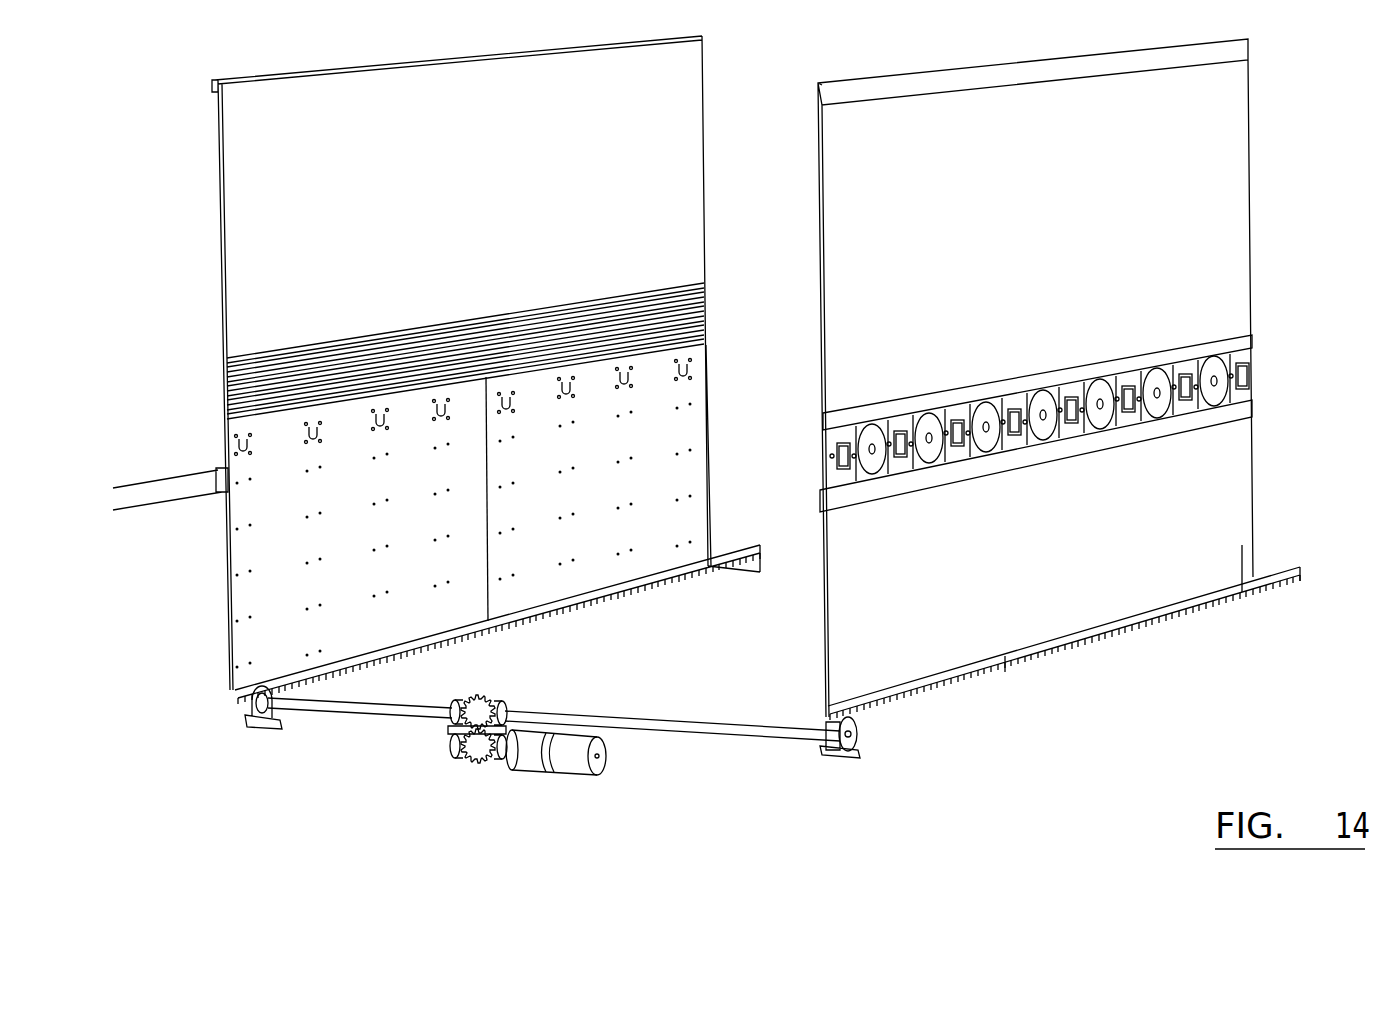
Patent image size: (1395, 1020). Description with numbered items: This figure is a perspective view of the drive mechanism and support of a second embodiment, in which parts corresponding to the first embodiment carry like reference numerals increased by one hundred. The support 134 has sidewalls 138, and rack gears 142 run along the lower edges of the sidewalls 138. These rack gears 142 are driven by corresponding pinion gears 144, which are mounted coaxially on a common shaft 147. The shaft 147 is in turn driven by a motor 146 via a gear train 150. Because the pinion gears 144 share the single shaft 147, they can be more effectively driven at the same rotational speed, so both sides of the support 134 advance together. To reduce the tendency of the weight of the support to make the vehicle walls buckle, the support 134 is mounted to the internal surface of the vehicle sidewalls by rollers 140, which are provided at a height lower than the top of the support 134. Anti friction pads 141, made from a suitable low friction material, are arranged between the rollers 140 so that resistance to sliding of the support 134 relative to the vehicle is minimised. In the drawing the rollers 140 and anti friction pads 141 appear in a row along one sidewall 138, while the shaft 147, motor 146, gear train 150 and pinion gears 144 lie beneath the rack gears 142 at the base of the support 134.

The support 134 is at (708, 242).
The sidewalls 138 is at (930, 603).
The rollers 140 is at (872, 424).
The anti friction pads 141 is at (960, 428).
The rack gears 142 is at (1082, 662).
The pinion gears 144 is at (855, 752).
The motor 146 is at (616, 766).
The shaft 147 is at (720, 726).
The gear train 150 is at (502, 692).